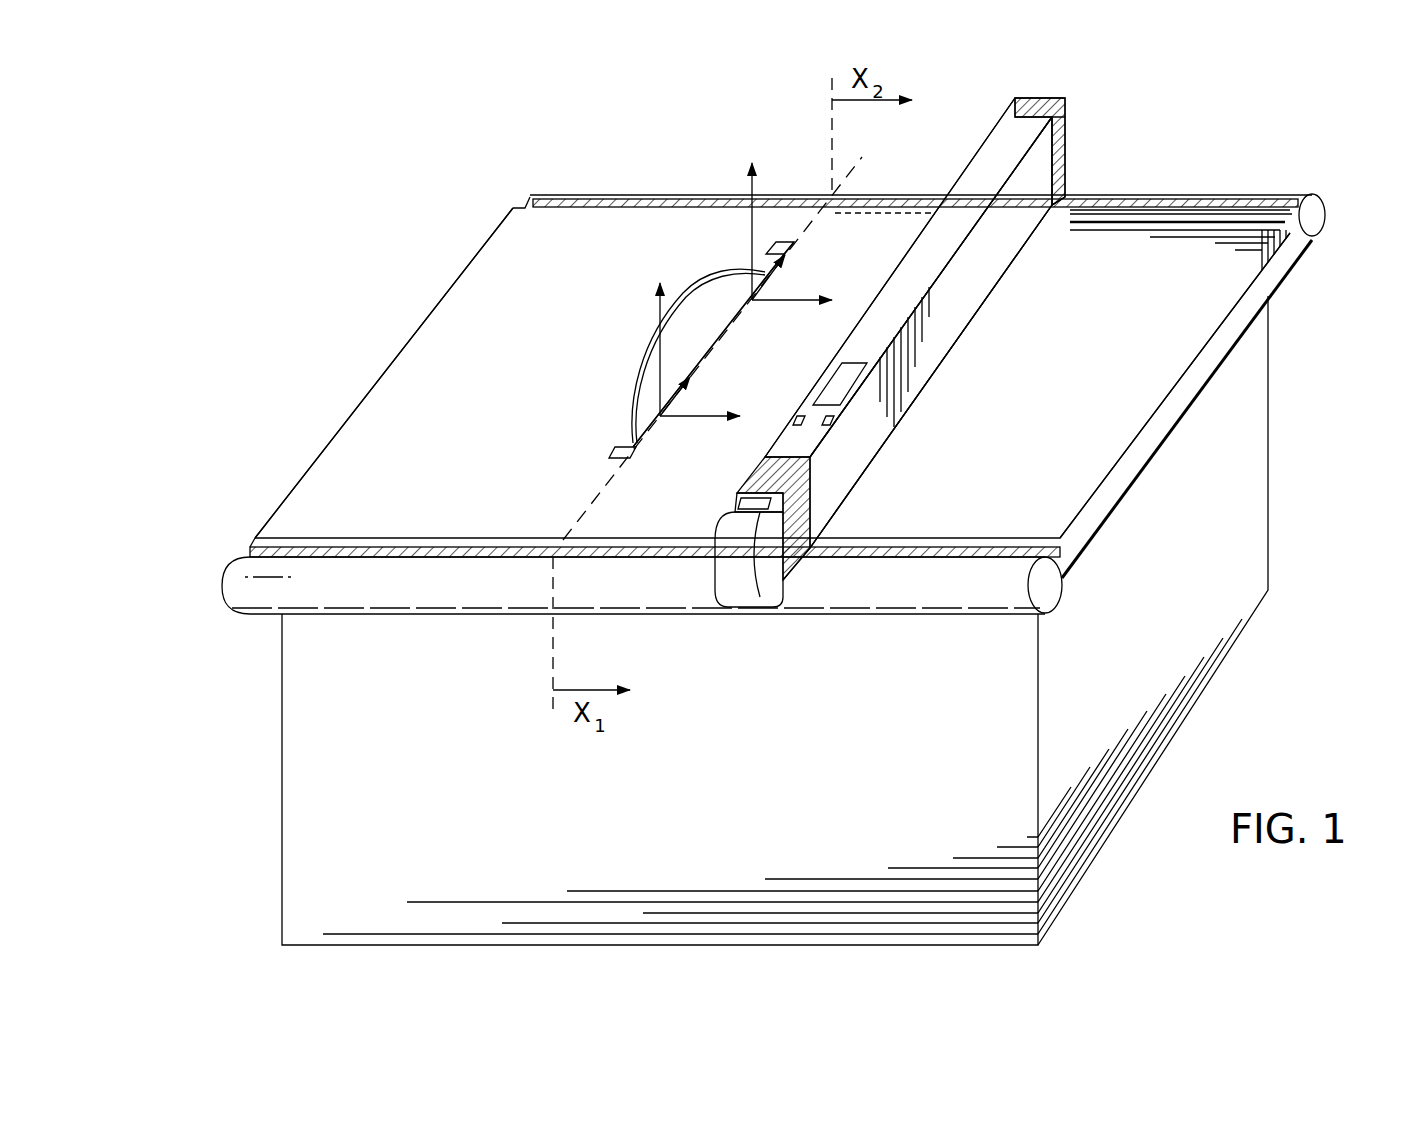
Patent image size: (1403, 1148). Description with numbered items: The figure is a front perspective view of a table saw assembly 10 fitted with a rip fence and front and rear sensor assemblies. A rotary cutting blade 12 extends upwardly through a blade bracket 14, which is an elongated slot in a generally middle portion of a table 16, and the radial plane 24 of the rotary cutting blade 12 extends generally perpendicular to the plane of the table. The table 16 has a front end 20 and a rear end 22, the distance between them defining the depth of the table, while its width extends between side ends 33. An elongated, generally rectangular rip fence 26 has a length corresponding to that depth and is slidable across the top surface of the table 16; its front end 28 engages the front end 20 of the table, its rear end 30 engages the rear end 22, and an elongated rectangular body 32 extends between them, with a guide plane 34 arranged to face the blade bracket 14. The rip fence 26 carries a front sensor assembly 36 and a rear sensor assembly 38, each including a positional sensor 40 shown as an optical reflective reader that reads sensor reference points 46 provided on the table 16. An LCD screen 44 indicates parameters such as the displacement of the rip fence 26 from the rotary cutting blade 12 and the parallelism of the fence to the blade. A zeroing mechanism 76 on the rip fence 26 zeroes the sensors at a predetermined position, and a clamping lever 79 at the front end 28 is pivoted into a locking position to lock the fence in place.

The table saw assembly 10 is at (470, 158).
The rotary cutting blade 12 is at (697, 268).
The blade bracket 14 is at (623, 450).
The table 16 is at (397, 430).
The front end 20 is at (463, 508).
The rear end 22 is at (562, 235).
The radial plane 24 is at (698, 332).
The rip fence 26 is at (962, 160).
The front end 28 is at (823, 512).
The rear end 30 is at (1042, 168).
The elongated rectangular body 32 is at (963, 295).
The side ends 33 is at (420, 322).
The guide plane 34 is at (903, 262).
The front sensor assembly 36 is at (813, 477).
The rear sensor assembly 38 is at (1068, 152).
The positional sensor 40 is at (1060, 132).
The LCD screen 44 is at (835, 395).
The sensor reference points 46 is at (650, 207).
The zeroing mechanism 76 is at (748, 503).
The clamping lever 79 is at (728, 573).